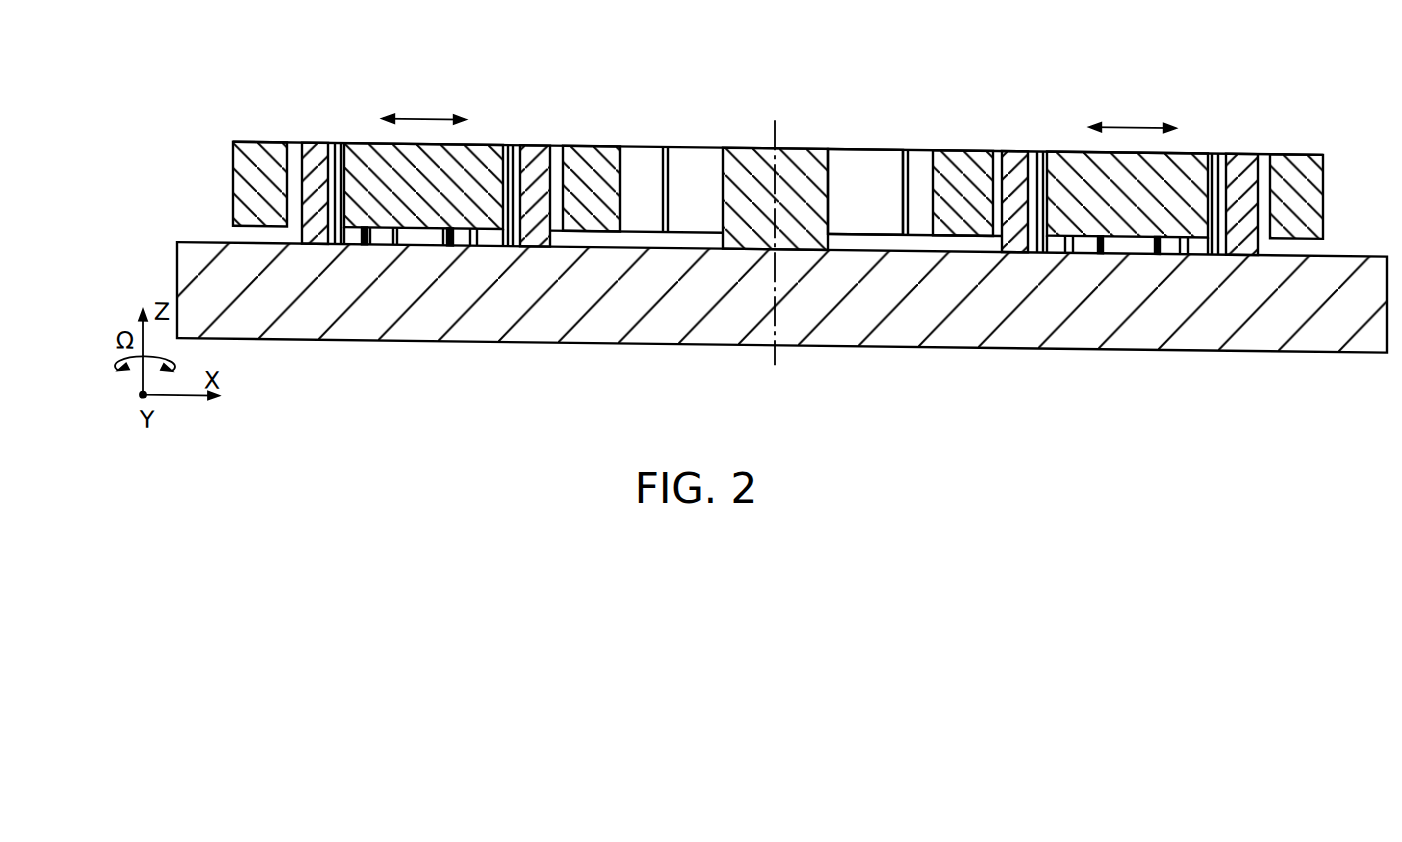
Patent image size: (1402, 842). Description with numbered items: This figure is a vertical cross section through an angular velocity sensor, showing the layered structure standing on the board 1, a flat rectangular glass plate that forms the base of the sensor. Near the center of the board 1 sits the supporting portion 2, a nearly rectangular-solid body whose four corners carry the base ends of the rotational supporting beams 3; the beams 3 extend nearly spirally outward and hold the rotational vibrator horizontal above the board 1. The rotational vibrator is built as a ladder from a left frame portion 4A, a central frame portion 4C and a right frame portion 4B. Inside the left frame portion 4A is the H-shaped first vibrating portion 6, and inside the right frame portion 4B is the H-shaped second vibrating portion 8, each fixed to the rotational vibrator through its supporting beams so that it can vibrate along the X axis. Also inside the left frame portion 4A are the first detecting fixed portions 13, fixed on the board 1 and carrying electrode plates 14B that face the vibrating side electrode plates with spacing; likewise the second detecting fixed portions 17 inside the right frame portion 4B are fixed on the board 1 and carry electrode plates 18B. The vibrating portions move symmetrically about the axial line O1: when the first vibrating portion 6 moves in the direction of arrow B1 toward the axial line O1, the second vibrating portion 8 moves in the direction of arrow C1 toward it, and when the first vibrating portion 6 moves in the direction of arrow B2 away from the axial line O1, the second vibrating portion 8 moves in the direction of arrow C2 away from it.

The board 1 is at (860, 310).
The supporting portion 2 is at (740, 151).
The rotational supporting beams 3 is at (665, 142).
The left frame portion 4A is at (262, 155).
The right frame portion 4B is at (1295, 150).
The central frame portion 4C is at (856, 163).
The first vibrating portion 6 is at (483, 167).
The second vibrating portion 8 is at (1073, 167).
The first detecting fixed portions 13 is at (312, 154).
The electrode plates 14B is at (363, 240).
The second detecting fixed portions 17 is at (1010, 165).
The electrode plates 18B is at (1090, 240).
The axial line O1 is at (772, 246).
The arrow B1 is at (455, 97).
The arrow B2 is at (424, 103).
The arrow C1 is at (1128, 110).
The arrow C2 is at (1165, 103).